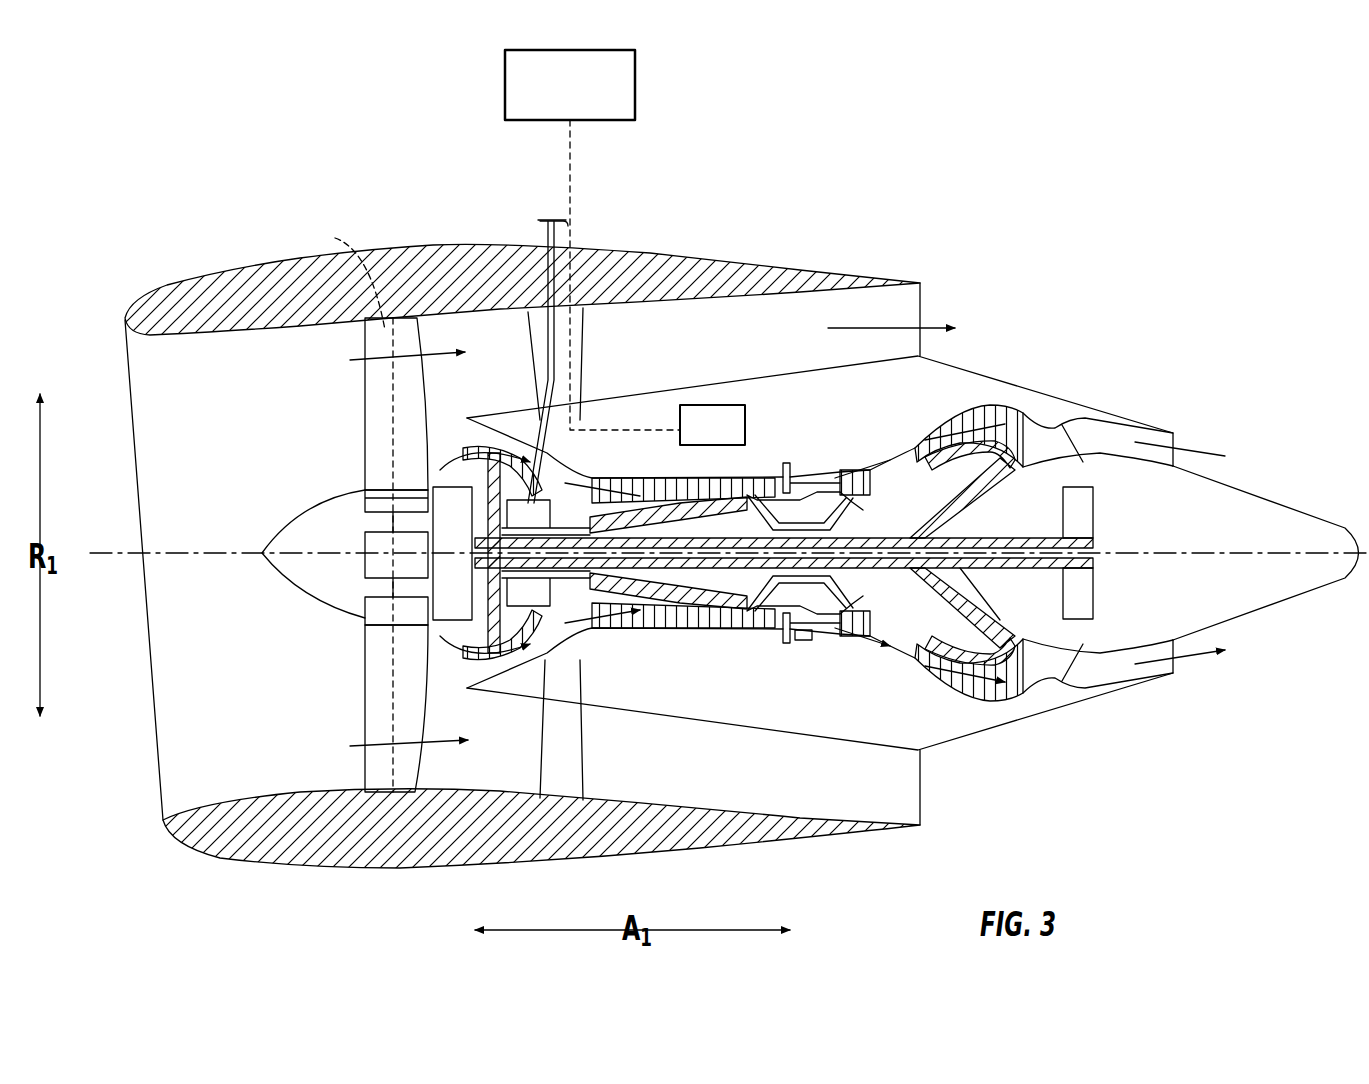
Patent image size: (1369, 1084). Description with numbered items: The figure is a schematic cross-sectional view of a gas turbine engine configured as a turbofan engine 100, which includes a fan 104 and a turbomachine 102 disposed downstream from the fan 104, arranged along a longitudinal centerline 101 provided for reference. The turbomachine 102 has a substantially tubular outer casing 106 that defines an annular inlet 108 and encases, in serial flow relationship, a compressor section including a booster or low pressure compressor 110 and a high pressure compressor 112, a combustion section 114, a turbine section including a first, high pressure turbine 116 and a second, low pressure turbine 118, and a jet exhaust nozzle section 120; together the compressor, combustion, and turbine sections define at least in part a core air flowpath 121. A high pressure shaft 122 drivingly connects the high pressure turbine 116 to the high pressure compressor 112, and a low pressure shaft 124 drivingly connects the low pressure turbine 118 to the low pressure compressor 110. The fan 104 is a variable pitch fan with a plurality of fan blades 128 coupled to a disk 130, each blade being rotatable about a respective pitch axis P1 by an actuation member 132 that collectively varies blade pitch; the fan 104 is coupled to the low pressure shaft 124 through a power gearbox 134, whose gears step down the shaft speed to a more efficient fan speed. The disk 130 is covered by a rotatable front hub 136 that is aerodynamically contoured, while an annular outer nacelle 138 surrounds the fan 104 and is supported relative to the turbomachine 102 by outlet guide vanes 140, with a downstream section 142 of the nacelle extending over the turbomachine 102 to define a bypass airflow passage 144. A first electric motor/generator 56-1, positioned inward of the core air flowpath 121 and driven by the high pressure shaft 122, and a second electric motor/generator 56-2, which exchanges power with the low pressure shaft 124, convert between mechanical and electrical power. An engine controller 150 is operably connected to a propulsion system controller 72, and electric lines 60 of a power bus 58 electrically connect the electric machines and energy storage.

The turbofan engine 100 is at (1030, 275).
The longitudinal centerline 101 is at (1140, 553).
The turbomachine 102 is at (700, 355).
The fan 104 is at (268, 352).
The outer casing 106 is at (770, 755).
The annular inlet 108 is at (478, 672).
The low pressure compressor 110 is at (505, 685).
The high pressure compressor 112 is at (612, 628).
The combustion section 114 is at (802, 642).
The high pressure turbine 116 is at (880, 630).
The low pressure turbine 118 is at (1013, 690).
The jet exhaust nozzle section 120 is at (1075, 670).
The core air flowpath 121 is at (670, 490).
The high pressure shaft 122 is at (807, 523).
The low pressure shaft 124 is at (865, 538).
The fan blades 128 is at (362, 718).
The disk 130 is at (378, 503).
The actuation member 132 is at (365, 553).
The power gearbox 134 is at (440, 485).
The front hub 136 is at (275, 577).
The outer nacelle 138 is at (425, 868).
The outlet guide vanes 140 is at (588, 345).
The downstream section 142 is at (835, 280).
The bypass airflow passage 144 is at (851, 331).
The controller 150 is at (712, 425).
The first electric motor/generator 56-1 is at (540, 600).
The second electric motor/generator 56-2 is at (1085, 500).
The power bus 58 is at (512, 232).
The electric lines 60 is at (542, 232).
The controller 72 is at (592, 240).
The pitch axis P1 is at (347, 269).